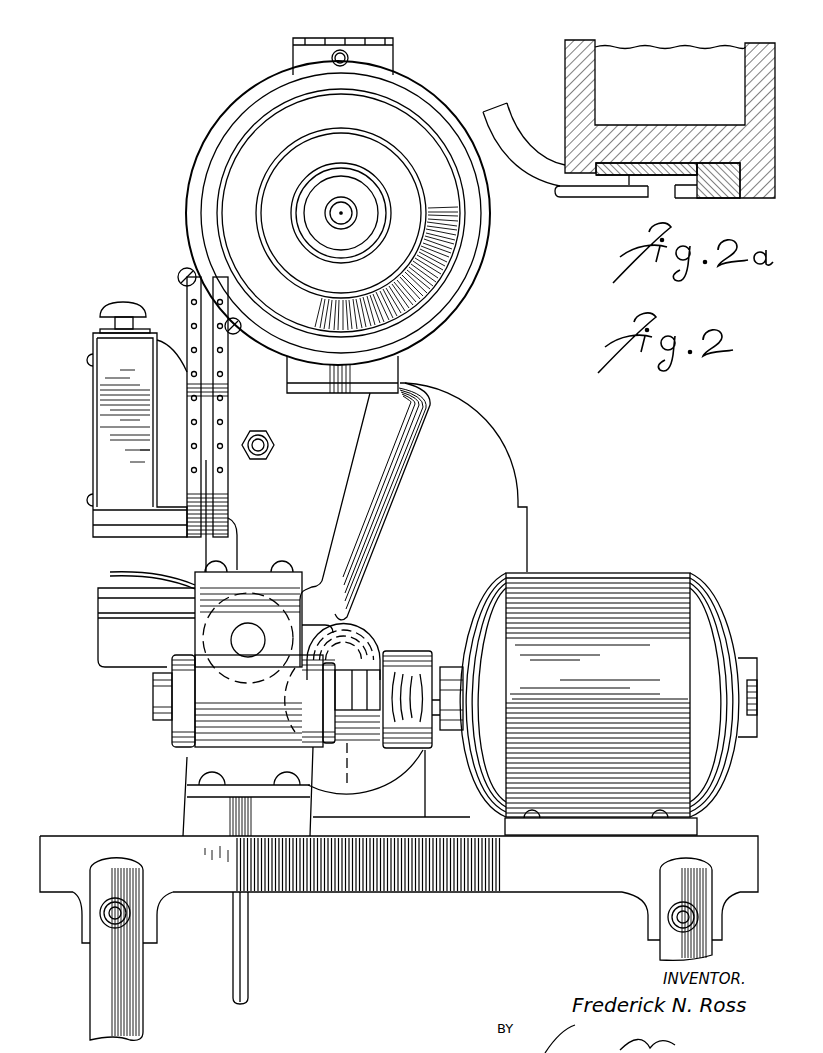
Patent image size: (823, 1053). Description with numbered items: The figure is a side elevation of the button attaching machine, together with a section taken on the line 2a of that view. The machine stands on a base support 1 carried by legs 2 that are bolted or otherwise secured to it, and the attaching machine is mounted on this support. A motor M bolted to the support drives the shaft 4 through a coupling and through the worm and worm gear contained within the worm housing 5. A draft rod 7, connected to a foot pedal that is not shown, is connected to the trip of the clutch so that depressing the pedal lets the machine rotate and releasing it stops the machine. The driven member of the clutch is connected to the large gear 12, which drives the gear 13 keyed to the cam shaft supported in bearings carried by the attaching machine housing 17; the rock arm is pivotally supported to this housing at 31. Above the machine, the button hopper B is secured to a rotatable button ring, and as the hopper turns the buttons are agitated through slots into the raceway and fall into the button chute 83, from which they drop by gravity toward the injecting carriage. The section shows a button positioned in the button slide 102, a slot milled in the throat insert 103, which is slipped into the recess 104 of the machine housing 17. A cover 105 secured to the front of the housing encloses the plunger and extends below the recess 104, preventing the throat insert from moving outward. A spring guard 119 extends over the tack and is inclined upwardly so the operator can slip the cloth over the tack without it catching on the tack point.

In FIG. 2, the base support 1 is at (64, 845).
In FIG. 2, the legs 2 is at (120, 1005).
In FIG. 2, the section line 2a- 2a is at (229, 495).
In FIG. 2, the shaft 4 is at (248, 632).
In FIG. 2, the worm housing 5 is at (178, 697).
In FIG. 2, the draft rod 7 is at (248, 967).
In FIG. 2, the large gear 12 is at (237, 690).
In FIG. 2, the gear 13 is at (352, 792).
In FIG. 2, the attaching machine housing 17 is at (492, 457).
In FIG. 2a, the attaching machine housing 17 is at (740, 46).
In FIG. 2, the pivot 31 is at (276, 444).
In FIG. 2, the button chute 83 is at (225, 408).
In FIG. 2a, the button chute 83 is at (514, 112).
In FIG. 2a, the button slide 102 is at (672, 178).
In FIG. 2a, the throat insert 103 is at (719, 200).
In FIG. 2a, the recess 104 is at (660, 160).
In FIG. 2, the cover 105 is at (93, 432).
In FIG. 2, the spring guard 119 is at (108, 573).
In FIG. 2, the button hopper B is at (470, 293).
In FIG. 2, the motor M is at (657, 573).